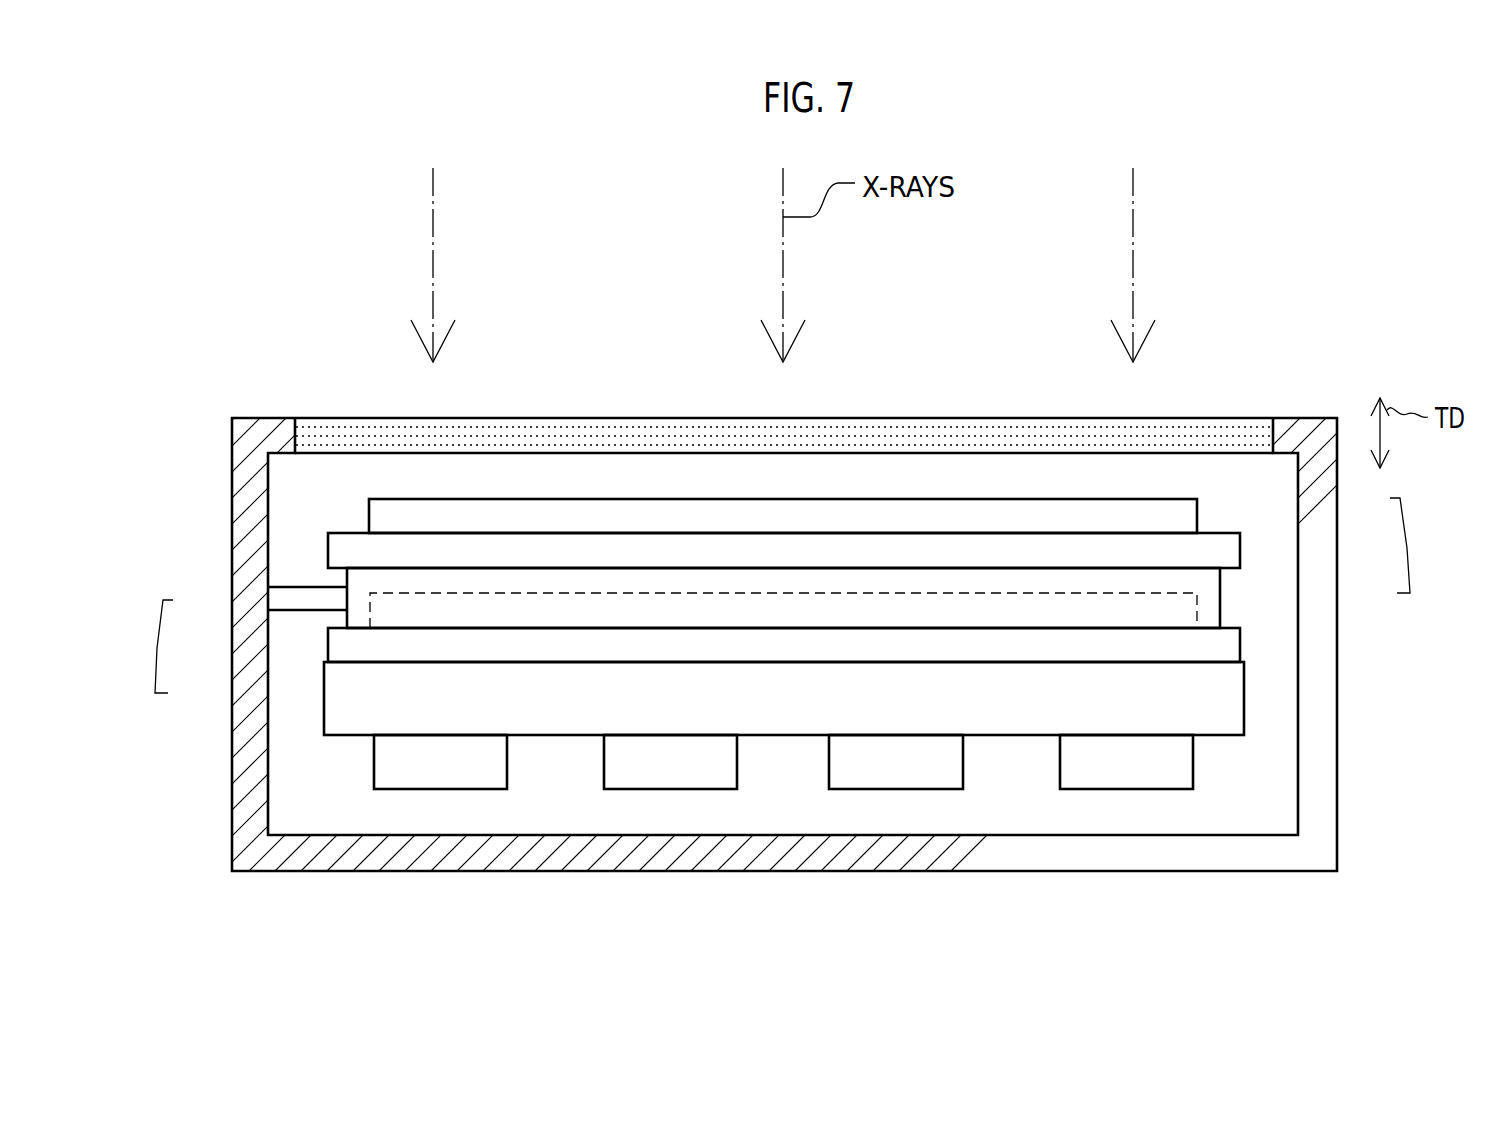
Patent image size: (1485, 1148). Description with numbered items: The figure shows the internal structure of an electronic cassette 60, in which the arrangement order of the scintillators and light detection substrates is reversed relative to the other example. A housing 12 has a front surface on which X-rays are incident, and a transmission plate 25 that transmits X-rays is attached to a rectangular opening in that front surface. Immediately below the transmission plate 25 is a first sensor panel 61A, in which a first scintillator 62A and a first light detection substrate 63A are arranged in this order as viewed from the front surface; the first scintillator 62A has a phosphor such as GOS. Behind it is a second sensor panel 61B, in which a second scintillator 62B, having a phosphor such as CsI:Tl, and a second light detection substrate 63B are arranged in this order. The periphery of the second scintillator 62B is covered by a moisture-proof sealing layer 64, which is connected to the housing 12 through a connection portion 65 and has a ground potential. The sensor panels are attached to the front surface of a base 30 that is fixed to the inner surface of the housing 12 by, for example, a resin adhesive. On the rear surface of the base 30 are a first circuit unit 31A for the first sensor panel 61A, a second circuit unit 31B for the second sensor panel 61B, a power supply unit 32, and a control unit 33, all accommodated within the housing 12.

The housing 12 is at (270, 418).
The transmission plate 25 is at (1010, 428).
The base 30 is at (1232, 698).
The first circuit unit 31A is at (438, 789).
The second circuit unit 31B is at (1127, 789).
The power supply unit 32 is at (670, 789).
The control unit 33 is at (897, 789).
The electronic cassette 60 is at (1254, 412).
The first sensor panel 61A is at (1408, 548).
The second sensor panel 61B is at (156, 648).
The first scintillator 62A is at (1187, 517).
The second scintillator 62B is at (383, 612).
The first light detection substrate 63A is at (1223, 548).
The second light detection substrate 63B is at (378, 648).
The sealing layer 64 is at (1212, 597).
The connection portion 65 is at (296, 590).